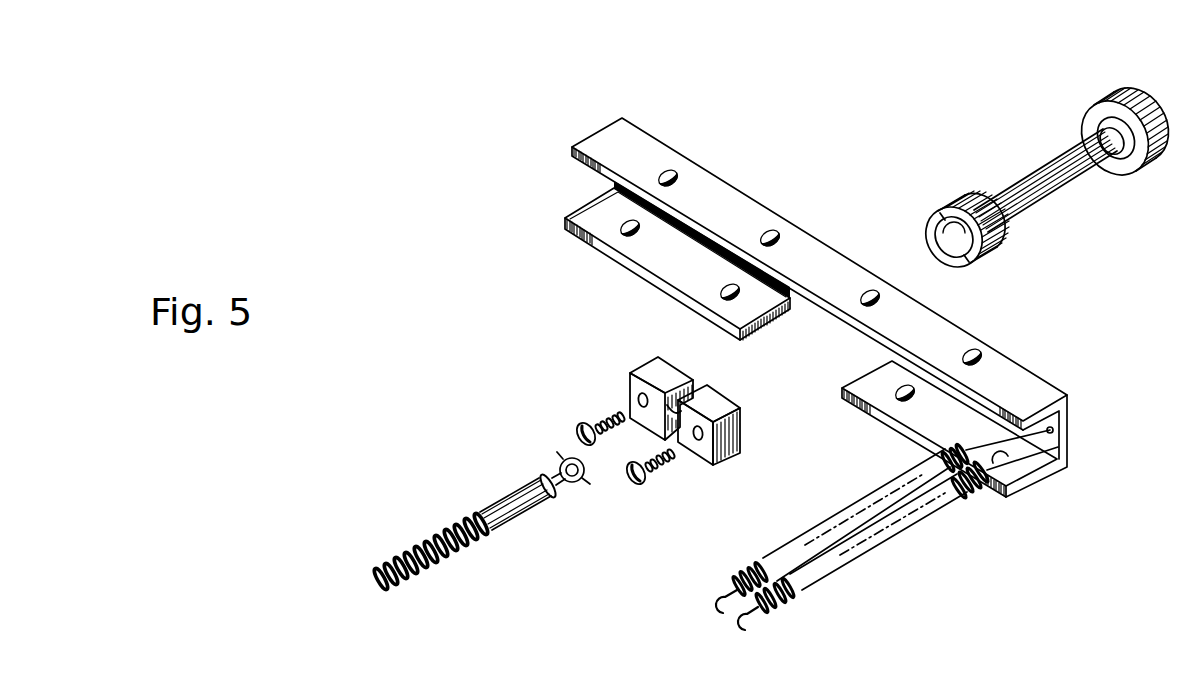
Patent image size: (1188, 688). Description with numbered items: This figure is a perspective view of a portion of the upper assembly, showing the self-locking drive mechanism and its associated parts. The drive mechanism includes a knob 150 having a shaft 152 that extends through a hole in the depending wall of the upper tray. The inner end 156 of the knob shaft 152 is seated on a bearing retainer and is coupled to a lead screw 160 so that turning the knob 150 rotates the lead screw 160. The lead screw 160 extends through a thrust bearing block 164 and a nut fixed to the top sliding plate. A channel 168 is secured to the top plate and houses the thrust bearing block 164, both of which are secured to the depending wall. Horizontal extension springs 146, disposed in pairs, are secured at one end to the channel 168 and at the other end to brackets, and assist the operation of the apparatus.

The horizontal extension springs 146 is at (800, 537).
The knob 150 is at (1113, 91).
The shaft 152 is at (1022, 173).
The inner end of the knob shaft 156 is at (948, 198).
The lead screw 160 is at (503, 497).
The thrust bearing block 164 is at (728, 465).
The channel 168 is at (587, 242).